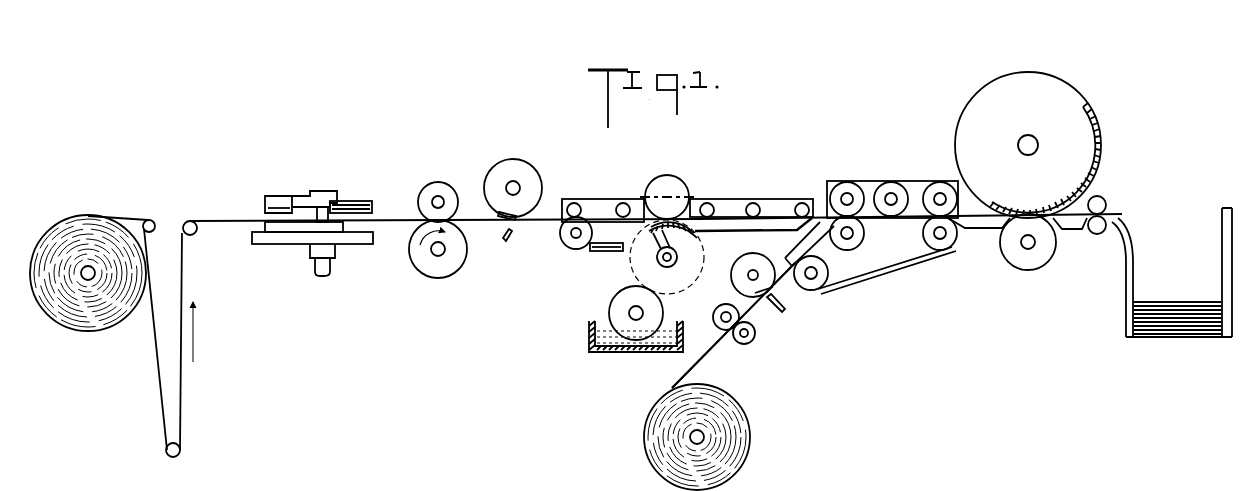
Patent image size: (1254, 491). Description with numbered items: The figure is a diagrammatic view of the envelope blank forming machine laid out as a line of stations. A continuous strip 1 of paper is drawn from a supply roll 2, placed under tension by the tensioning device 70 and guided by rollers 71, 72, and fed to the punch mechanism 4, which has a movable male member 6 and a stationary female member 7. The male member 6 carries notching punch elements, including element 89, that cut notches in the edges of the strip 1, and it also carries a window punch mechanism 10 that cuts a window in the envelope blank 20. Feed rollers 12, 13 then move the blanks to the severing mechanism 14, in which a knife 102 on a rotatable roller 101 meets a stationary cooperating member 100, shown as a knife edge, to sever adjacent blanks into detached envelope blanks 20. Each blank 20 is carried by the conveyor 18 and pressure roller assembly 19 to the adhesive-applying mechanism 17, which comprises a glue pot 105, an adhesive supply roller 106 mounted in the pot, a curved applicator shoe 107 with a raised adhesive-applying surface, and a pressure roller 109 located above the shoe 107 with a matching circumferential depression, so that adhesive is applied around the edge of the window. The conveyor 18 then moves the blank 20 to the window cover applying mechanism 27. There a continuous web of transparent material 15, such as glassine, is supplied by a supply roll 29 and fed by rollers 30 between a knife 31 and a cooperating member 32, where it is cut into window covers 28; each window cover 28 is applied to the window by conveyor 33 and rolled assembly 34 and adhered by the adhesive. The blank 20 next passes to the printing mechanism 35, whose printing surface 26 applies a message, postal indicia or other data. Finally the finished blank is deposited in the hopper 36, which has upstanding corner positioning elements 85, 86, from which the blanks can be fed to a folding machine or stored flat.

The continuous strip 1 is at (160, 343).
The supply roll 2 is at (82, 230).
The punch mechanism 4 is at (319, 211).
The male member 6 is at (292, 202).
The female member 7 is at (273, 242).
The window punch mechanism 10 is at (366, 212).
The feed roller 12 is at (440, 193).
The feed roller 13 is at (437, 270).
The severing mechanism 14 is at (515, 209).
The web of transparent material 15 is at (684, 372).
The adhesive-applying mechanism 17 is at (709, 187).
The conveyor 18 is at (604, 251).
The pressure roller assembly 19 is at (603, 198).
The envelope blank 20 is at (542, 222).
The printing surface 26 is at (1101, 128).
The window cover applying mechanism 27 is at (876, 206).
The window cover 28 is at (792, 287).
The supply roll 29 is at (749, 452).
The rollers 30 is at (738, 347).
The knife 31 is at (764, 300).
The stripper plate 32 is at (784, 312).
The conveyor 33 is at (887, 226).
The rolled assembly 34 is at (916, 188).
The printing mechanism 35 is at (1048, 151).
The hopper 36 is at (1187, 250).
The tensioning device 70 is at (181, 450).
The guide roller 71 is at (153, 219).
The guide roller 72 is at (193, 221).
The corner positioning element 85 is at (1127, 276).
The corner positioning element 86 is at (1228, 214).
The notching punch element 89 is at (276, 211).
The cooperating member 100 is at (517, 232).
The rotatable roller 101 is at (510, 168).
The knife 102 is at (500, 221).
The glue pot 105 is at (604, 353).
The adhesive supply roller 106 is at (609, 313).
The curved applicator shoe 107 is at (690, 262).
The pressure roller 109 is at (672, 184).